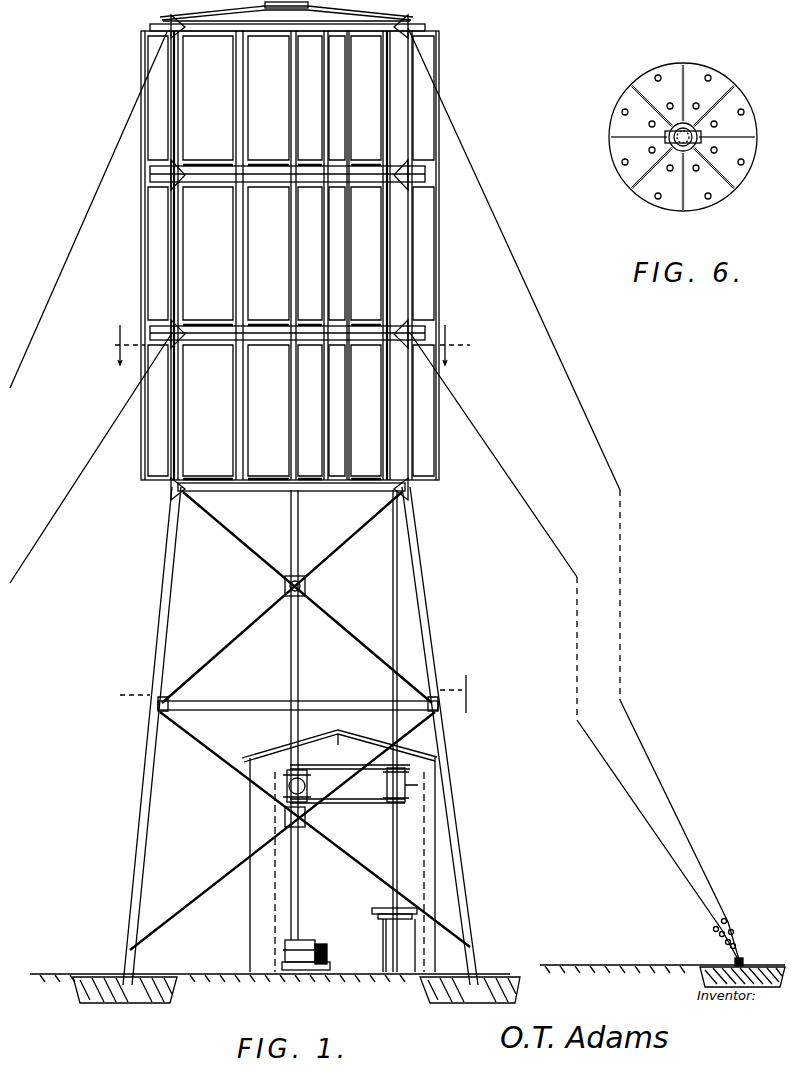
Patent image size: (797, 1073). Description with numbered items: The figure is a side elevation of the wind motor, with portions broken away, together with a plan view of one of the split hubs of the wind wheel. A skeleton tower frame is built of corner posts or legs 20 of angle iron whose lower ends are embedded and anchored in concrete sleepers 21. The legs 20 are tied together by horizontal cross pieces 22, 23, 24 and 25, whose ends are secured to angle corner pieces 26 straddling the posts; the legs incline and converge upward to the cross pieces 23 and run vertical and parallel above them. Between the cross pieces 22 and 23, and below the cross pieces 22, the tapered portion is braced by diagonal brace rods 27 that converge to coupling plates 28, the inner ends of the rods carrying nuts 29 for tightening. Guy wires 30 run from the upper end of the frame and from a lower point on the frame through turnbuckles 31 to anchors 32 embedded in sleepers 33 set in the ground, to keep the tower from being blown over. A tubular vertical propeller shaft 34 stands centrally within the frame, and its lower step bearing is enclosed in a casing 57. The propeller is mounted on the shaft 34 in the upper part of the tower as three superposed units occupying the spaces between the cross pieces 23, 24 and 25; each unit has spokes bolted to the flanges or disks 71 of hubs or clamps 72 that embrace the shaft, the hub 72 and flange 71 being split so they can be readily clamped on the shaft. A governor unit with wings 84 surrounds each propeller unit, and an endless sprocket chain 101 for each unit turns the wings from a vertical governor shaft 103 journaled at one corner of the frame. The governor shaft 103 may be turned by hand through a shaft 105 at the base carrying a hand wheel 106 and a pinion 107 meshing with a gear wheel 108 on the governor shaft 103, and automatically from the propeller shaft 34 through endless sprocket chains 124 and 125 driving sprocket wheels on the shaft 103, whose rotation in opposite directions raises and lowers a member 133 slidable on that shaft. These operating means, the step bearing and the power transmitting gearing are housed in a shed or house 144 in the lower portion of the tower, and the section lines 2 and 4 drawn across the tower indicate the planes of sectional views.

In FIG. 1, the section line 2- 2 is at (295, 694).
In FIG. 1, the section line 4- 4 is at (288, 345).
In FIG. 1, the corner posts or legs 20 is at (165, 575).
In FIG. 1, the concrete sleepers 21 is at (104, 984).
In FIG. 1, the cross pieces 22 is at (243, 708).
In FIG. 1, the cross pieces 23 is at (245, 492).
In FIG. 1, the cross pieces 24 is at (402, 176).
In FIG. 1, the cross pieces 25 is at (359, 25).
In FIG. 1, the angle corner pieces 26 is at (166, 177).
In FIG. 1, the diagonal brace rods 27 is at (322, 565).
In FIG. 1, the coupling plates 28 is at (284, 587).
In FIG. 1, the nuts 29 is at (298, 578).
In FIG. 1, the guy wires 30 is at (32, 346).
In FIG. 1, the turnbuckles 31 is at (732, 937).
In FIG. 1, the anchors 32 is at (742, 960).
In FIG. 1, the sleepers 33 is at (756, 975).
In FIG. 1, the vertical propeller shaft 34 is at (299, 670).
In FIG. 1, the casing 57 is at (293, 942).
In FIG. 6, the flanges or disks 71 is at (617, 156).
In FIG. 6, the hubs or clamps 72 is at (700, 135).
In FIG. 1, the governor wings 84 is at (430, 100).
In FIG. 1, the endless sprocket chain 101 is at (310, 326).
In FIG. 1, the vertical governor shaft 103 is at (392, 608).
In FIG. 6, the vertical governor shaft 103 is at (683, 152).
In FIG. 1, the shaft 105 is at (384, 945).
In FIG. 1, the hand wheel 106 is at (380, 910).
In FIG. 1, the pinion 107 is at (376, 917).
In FIG. 1, the gear wheel 108 is at (420, 912).
In FIG. 1, the lower pipe and valve 124 is at (345, 805).
In FIG. 1, the endless sprocket chain 125 is at (350, 760).
In FIG. 1, the member 133 is at (418, 790).
In FIG. 1, the shed or house 144 is at (250, 828).